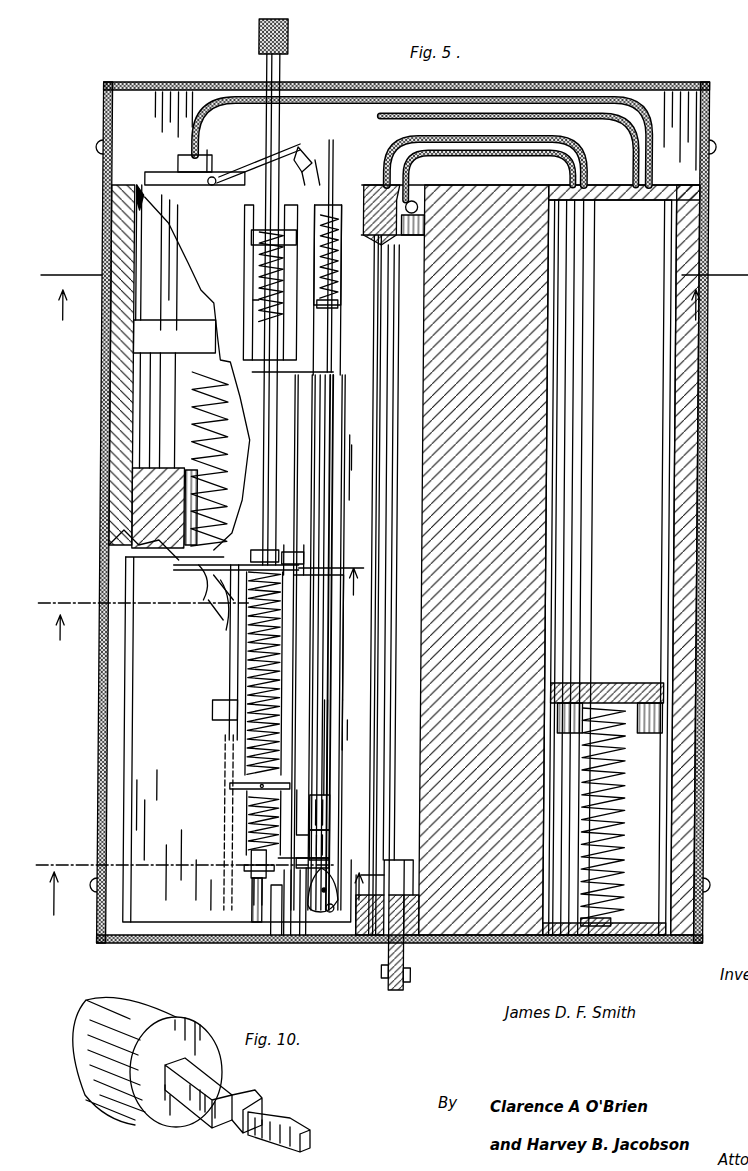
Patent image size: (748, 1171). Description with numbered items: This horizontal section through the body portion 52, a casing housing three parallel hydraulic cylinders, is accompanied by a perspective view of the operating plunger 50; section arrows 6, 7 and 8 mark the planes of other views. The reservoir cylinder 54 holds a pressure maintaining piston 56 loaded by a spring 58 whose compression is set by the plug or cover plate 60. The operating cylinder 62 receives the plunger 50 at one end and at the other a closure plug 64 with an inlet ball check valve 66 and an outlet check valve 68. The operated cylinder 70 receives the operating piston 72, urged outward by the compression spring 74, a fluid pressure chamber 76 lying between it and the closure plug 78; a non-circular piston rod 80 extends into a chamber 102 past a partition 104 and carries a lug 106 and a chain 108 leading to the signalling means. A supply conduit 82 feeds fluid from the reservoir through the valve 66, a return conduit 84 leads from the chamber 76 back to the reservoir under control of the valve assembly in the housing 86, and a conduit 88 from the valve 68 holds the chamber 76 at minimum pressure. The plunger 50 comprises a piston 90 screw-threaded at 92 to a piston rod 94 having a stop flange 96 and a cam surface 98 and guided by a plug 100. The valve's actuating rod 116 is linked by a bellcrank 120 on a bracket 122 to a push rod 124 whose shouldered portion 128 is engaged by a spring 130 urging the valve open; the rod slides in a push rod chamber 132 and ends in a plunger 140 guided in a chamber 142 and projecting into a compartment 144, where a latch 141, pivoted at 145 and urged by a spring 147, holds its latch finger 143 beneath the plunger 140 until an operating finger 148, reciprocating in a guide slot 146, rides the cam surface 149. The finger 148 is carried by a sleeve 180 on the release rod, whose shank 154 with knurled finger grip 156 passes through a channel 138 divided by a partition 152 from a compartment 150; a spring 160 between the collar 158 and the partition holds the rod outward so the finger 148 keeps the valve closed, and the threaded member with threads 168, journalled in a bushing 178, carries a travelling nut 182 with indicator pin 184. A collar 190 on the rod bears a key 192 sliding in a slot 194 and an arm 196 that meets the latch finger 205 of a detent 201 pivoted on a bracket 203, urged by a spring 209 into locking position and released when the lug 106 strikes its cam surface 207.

In FIG. 5, the operating plunger 50 is at (381, 962).
In FIG. 10, the operating plunger 50 is at (255, 1091).
In FIG. 5, the body portion 52 is at (492, 943).
In FIG. 5, the reservoir cylinder 54 is at (665, 605).
In FIG. 5, the pressure maintaining piston 56 is at (600, 695).
In FIG. 5, the spring 58 is at (622, 825).
In FIG. 5, the removable cylinder plug 60 is at (628, 943).
In FIG. 5, the operating cylinder 62 is at (410, 878).
In FIG. 5, the closure plug 64 is at (388, 243).
In FIG. 5, the non-return inlet ball check valve 66 is at (430, 190).
In FIG. 5, the non-return outlet ball check valve 68 is at (368, 188).
In FIG. 5, the operated cylinder 70 is at (130, 412).
In FIG. 5, the operating piston 72 is at (135, 340).
In FIG. 5, the compression spring 74 is at (195, 432).
In FIG. 5, the fluid pressure chamber 76 is at (128, 252).
In FIG. 5, the cylinder closure plug 78 is at (137, 185).
In FIG. 5, the piston rod 80 is at (188, 508).
In FIG. 5, the supply conduit 82 is at (508, 153).
In FIG. 5, the return conduit 84 is at (316, 105).
In FIG. 5, the valve casing 86 is at (165, 172).
In FIG. 5, the conduit 88 is at (384, 160).
In FIG. 10, the piston 90 is at (117, 1030).
In FIG. 5, the screw-threaded engagement 92 is at (393, 892).
In FIG. 5, the piston rod 94 is at (410, 962).
In FIG. 10, the piston rod 94 is at (215, 1095).
In FIG. 5, the rectangular shoulder or flange 96 is at (386, 970).
In FIG. 5, the cam surface 98 is at (404, 985).
In FIG. 5, the plug 100 is at (430, 900).
In FIG. 5, the chamber 102 is at (145, 718).
In FIG. 5, the partition 104 is at (175, 565).
In FIG. 5, the lateral shoulder or lug 106 is at (213, 718).
In FIG. 5, the chain or cable 108 is at (228, 825).
In FIG. 5, the actuating rod 116 is at (250, 175).
In FIG. 5, the bellcrank 120 is at (305, 150).
In FIG. 5, the bracket 122 is at (316, 179).
In FIG. 5, the valve actuating push rod 124 is at (330, 420).
In FIG. 5, the shouldered portion 128 is at (333, 305).
In FIG. 5, the spring 130 is at (340, 275).
In FIG. 5, the push rod chamber 132 is at (333, 462).
In FIG. 5, the reset rod chamber 138 is at (295, 480).
In FIG. 5, the plunger 140 is at (333, 835).
In FIG. 5, the latch 141 is at (338, 875).
In FIG. 5, the guide chamber 142 is at (335, 830).
In FIG. 5, the latch finger 143 is at (362, 860).
In FIG. 5, the compartment 144 is at (320, 920).
In FIG. 5, the pivot 145 is at (333, 913).
In FIG. 5, the guide slot 146 is at (280, 935).
In FIG. 5, the spring 147 is at (345, 880).
In FIG. 5, the operating finger 148 is at (375, 850).
In FIG. 5, the cam surface 149 is at (295, 935).
In FIG. 5, the compartment 150 is at (252, 275).
In FIG. 5, the partition member 152 is at (286, 372).
In FIG. 5, the shank 154 is at (262, 312).
In FIG. 5, the knurled finger grip portion 156 is at (255, 38).
In FIG. 5, the integral flange or collar 158 is at (245, 222).
In FIG. 5, the spring 160 is at (250, 236).
In FIG. 5, the external threads 168 is at (250, 645).
In FIG. 5, the journal and guide bushing 178 is at (258, 920).
In FIG. 5, the sleeve 180 is at (248, 862).
In FIG. 5, the travelling nut 182 is at (245, 779).
In FIG. 5, the indicator pin 184 is at (265, 789).
In FIG. 5, the sleeve or collar 190 is at (262, 550).
In FIG. 5, the arm or key 192 is at (288, 550).
In FIG. 5, the elongated slot 194 is at (300, 605).
In FIG. 5, the arm 196 is at (236, 625).
In FIG. 5, the detent 201 is at (220, 566).
In FIG. 5, the bracket 203 is at (207, 585).
In FIG. 5, the latch finger 205 is at (225, 612).
In FIG. 5, the actuating or cam surface 207 is at (213, 605).
In FIG. 5, the spring 209 is at (215, 598).
In FIG. 5, the section line 6 is at (394, 310).
In FIG. 5, the section line 7 is at (201, 613).
In FIG. 5, the section line 8 is at (200, 902).